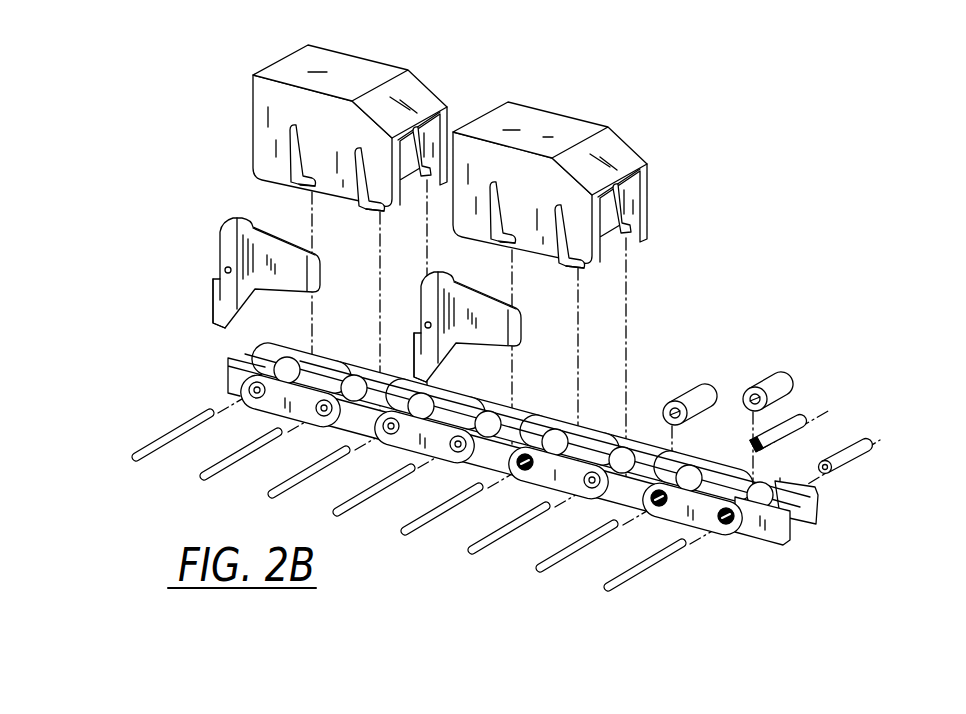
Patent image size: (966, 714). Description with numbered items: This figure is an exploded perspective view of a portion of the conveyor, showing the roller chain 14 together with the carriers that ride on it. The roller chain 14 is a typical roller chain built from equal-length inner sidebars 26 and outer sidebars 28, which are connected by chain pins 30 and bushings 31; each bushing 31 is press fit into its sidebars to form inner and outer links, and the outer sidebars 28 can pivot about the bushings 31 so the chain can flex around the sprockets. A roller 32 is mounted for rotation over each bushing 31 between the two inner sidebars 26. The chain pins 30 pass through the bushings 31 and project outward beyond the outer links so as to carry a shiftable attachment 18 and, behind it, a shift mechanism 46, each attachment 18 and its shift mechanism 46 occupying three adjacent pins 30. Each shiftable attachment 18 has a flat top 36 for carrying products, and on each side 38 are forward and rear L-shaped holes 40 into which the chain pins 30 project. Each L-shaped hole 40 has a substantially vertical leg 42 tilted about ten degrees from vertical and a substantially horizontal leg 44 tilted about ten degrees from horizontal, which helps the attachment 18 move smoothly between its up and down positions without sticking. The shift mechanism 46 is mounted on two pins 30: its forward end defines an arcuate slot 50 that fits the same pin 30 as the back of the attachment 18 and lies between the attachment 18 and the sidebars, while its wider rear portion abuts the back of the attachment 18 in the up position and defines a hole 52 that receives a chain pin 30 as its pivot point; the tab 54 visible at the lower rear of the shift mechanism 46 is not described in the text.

The roller chain 14 is at (587, 449).
The shiftable attachment 18 is at (460, 156).
The inner sidebar 26 is at (808, 526).
The outer sidebar 28 is at (320, 373).
The chain pin 30 is at (474, 556).
The bushing 31 is at (805, 421).
The roller 32 is at (539, 416).
The flat top 36 is at (312, 72).
The side 38 is at (268, 148).
The L-shaped hole 40 is at (291, 162).
The substantially vertical leg 42 is at (290, 128).
The substantially horizontal leg 44 is at (300, 195).
The shift mechanism 46 is at (333, 335).
The arcuate slot 50 is at (302, 291).
The hole 52 is at (224, 270).
The tab 54 is at (215, 328).